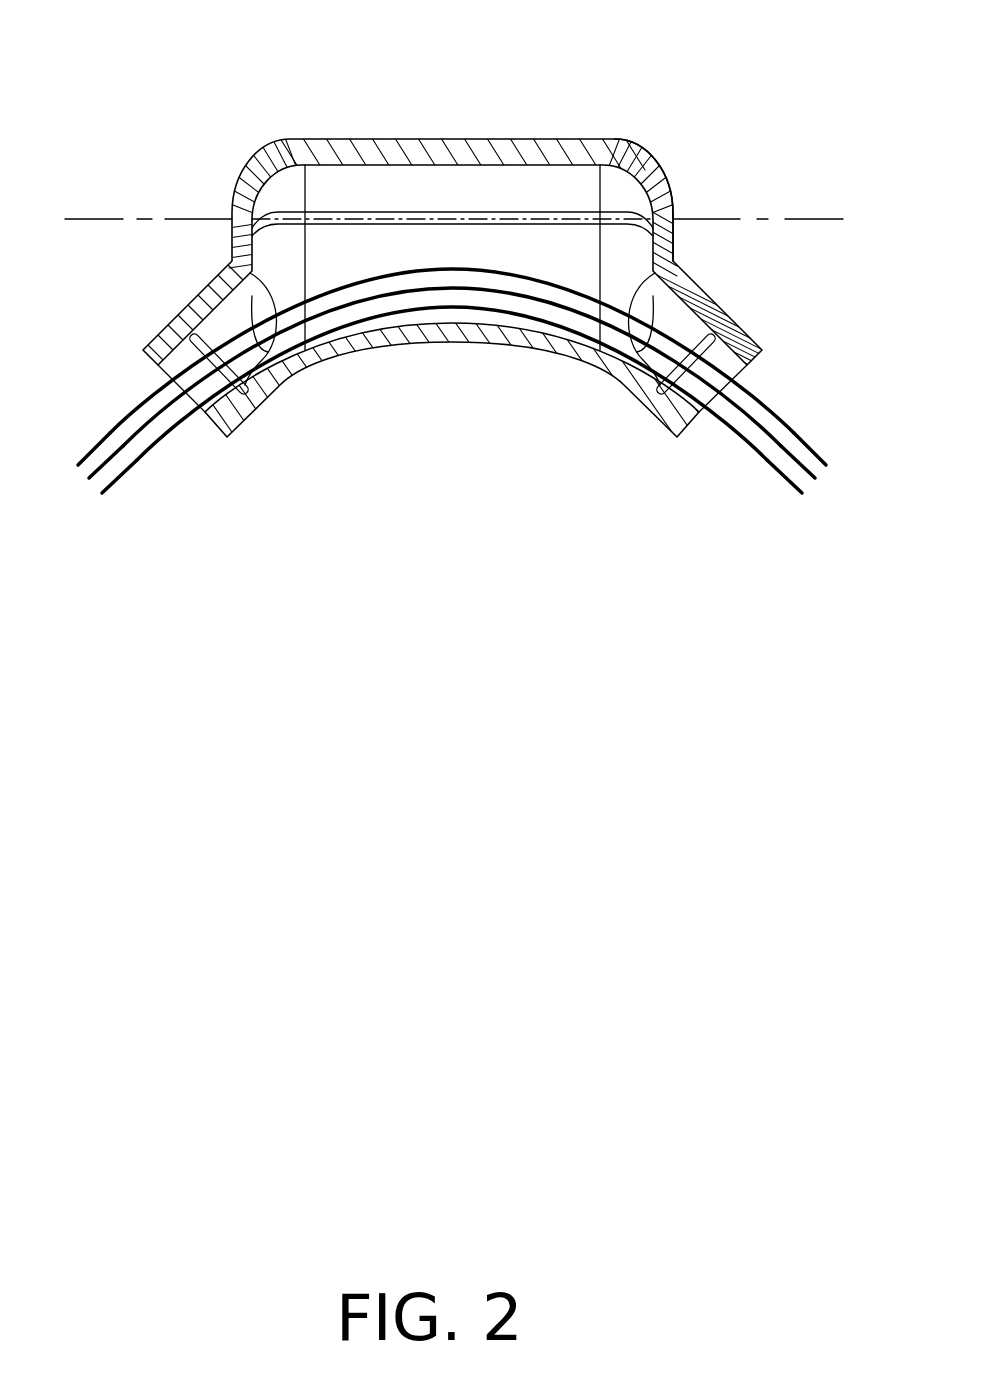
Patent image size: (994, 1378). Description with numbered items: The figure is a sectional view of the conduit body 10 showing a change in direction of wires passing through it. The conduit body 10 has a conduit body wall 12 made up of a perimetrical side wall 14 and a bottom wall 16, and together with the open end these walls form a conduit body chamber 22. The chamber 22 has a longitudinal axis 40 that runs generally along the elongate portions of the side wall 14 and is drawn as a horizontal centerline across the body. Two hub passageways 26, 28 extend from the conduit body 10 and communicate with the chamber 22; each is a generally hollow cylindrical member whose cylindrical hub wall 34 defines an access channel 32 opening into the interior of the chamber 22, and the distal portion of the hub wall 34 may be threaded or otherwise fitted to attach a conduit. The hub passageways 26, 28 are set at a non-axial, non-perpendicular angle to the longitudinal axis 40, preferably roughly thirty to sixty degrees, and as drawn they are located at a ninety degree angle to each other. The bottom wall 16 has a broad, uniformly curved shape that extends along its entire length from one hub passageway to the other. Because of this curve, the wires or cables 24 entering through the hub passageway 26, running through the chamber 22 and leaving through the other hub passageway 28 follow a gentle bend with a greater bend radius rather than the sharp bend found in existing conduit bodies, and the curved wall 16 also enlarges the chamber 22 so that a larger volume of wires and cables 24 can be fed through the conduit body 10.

The conduit body 10 is at (695, 118).
The conduit body wall 12 is at (572, 139).
The perimetrical side wall 14 is at (673, 187).
The bottom wall 16 is at (452, 337).
The conduit body chamber 22 is at (433, 248).
The wires or cables 24 is at (128, 472).
The hub passageway 26 is at (152, 396).
The hub passageway 28 is at (768, 399).
The access channel 32 is at (218, 333).
The hub wall 34 is at (167, 336).
The longitudinal axis 40 is at (80, 218).